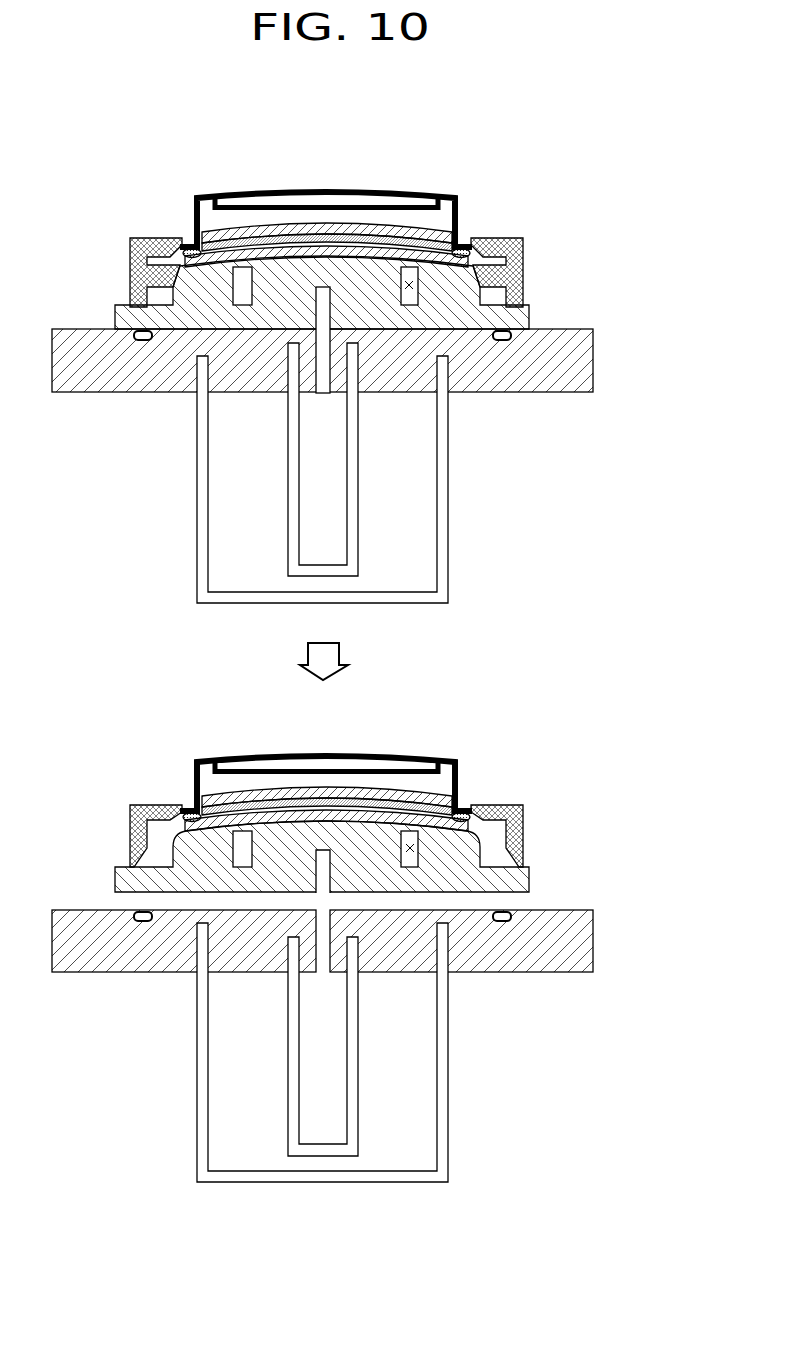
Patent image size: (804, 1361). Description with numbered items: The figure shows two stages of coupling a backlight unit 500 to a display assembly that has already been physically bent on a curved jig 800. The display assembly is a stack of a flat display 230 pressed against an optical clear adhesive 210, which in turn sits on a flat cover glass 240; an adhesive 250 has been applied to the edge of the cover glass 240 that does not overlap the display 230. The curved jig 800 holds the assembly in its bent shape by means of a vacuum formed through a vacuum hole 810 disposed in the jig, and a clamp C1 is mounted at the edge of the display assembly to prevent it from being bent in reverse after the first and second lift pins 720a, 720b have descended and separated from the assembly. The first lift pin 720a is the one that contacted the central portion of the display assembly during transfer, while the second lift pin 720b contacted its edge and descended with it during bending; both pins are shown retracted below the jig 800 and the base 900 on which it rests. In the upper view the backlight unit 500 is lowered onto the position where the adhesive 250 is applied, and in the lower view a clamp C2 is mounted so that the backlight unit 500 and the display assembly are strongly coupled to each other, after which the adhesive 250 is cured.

The backlight unit 500 is at (190, 191).
The display 230 is at (295, 236).
The optical clear adhesive 210 is at (350, 243).
The cover glass 240 is at (392, 254).
The vacuum hole 810 is at (410, 280).
The adhesive 250 is at (463, 248).
The clamp C2 is at (523, 253).
The clamp C1 is at (523, 278).
The curved jig 800 is at (527, 315).
The base plate 900 is at (593, 365).
The second lift pin 720b is at (448, 464).
The first lift pin 720a is at (358, 505).